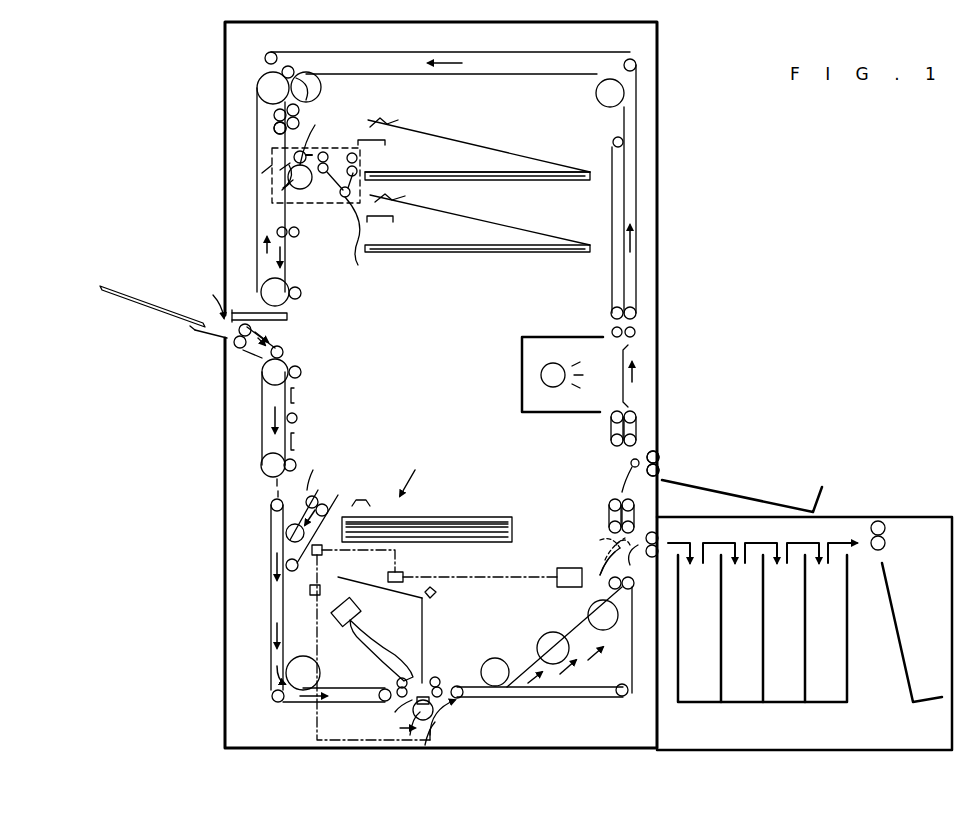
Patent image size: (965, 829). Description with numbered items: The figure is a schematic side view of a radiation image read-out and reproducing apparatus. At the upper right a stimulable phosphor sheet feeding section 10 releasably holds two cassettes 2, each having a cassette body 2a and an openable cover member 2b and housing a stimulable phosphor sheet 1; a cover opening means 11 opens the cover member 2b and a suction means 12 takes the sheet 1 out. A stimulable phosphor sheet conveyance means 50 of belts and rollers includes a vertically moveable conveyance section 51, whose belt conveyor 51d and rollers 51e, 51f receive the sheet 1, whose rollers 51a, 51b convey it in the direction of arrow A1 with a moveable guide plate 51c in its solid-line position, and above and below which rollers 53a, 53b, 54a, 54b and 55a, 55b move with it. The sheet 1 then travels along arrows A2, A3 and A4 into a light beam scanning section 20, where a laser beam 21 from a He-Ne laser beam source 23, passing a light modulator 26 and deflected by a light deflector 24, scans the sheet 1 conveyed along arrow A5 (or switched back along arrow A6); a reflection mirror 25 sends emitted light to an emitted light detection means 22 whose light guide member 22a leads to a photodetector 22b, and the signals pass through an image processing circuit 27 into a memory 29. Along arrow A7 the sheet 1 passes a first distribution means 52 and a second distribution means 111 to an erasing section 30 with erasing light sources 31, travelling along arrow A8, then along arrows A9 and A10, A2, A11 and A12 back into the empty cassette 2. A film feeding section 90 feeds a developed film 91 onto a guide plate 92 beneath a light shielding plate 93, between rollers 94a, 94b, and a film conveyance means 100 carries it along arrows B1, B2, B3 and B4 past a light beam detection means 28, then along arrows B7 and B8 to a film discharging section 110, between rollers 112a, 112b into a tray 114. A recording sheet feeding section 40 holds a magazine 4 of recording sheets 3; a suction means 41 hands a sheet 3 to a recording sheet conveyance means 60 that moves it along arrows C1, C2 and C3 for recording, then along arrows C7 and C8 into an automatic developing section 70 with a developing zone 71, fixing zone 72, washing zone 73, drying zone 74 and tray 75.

The stimulable phosphor sheet 1 is at (443, 174).
The cassette 2 is at (477, 177).
The cassette body 2a is at (508, 178).
The cover member 2b is at (482, 138).
The recording sheet 3 is at (482, 517).
The recording sheet feeding magazine 4 is at (425, 517).
The stimulable phosphor sheet feeding section 10 is at (590, 226).
The cover opening means 11 is at (400, 122).
The suction means 12 is at (388, 140).
The light beam scanning section 20 is at (515, 634).
The laser beam 21 is at (512, 575).
The emitted light detection means 22 is at (396, 647).
The light guide member 22a is at (410, 640).
The photodetector 22b is at (358, 612).
The He-Ne laser beam source 23 is at (568, 587).
The light deflector 24 is at (438, 593).
The reflection mirror 25 is at (444, 680).
The light modulator 26 is at (403, 575).
The image processing circuit 27 is at (300, 595).
The light beam detection means 28 is at (445, 700).
The memory 29 is at (325, 555).
The erasing section 30 is at (530, 350).
The erasing light source 31 is at (545, 380).
The recording sheet feeding section 40 is at (417, 474).
The suction means 41 is at (370, 500).
The stimulable phosphor sheet conveyance means 50 is at (558, 58).
The moveable conveyance section 51 is at (268, 172).
The roller 51a is at (284, 183).
The roller 51b is at (300, 160).
The moveable guide plate 51c is at (274, 132).
The belt conveyor 51d is at (364, 237).
The roller 51e is at (321, 152).
The roller 51f is at (358, 158).
The first distribution means 52 is at (652, 560).
The roller 53a is at (262, 110).
The roller 53b is at (313, 75).
The roller 54a is at (274, 120).
The roller 54b is at (300, 118).
The roller 55a is at (277, 230).
The roller 55b is at (298, 232).
The recording sheet conveyance means 60 is at (315, 500).
The automatic developing section 70 is at (930, 557).
The developing zone 71 is at (695, 693).
The fixing zone 72 is at (745, 693).
The washing zone 73 is at (790, 693).
The drying zone 74 is at (835, 693).
The tray 75 is at (905, 660).
The film feeding section 90 is at (198, 295).
The film 91 is at (112, 298).
The guide plate 92 is at (198, 338).
The light shielding plate 93 is at (290, 314).
The roller 94a is at (280, 338).
The roller 94b is at (238, 347).
The film conveyance means 100 is at (296, 404).
The film discharging section 110 is at (678, 437).
The second distribution means 111 is at (631, 464).
The roller 112a is at (660, 456).
The roller 112b is at (660, 470).
The tray 114 is at (775, 505).
The arrow A1 is at (262, 162).
The arrow A2 is at (288, 258).
The arrow A3 is at (272, 560).
The arrow A4 is at (305, 704).
The arrow A5 is at (412, 703).
The arrow A6 is at (418, 708).
The arrow A7 is at (598, 660).
The arrow A8 is at (642, 375).
The arrow A9 is at (640, 233).
The arrow A10 is at (442, 57).
The arrow A11 is at (262, 250).
The arrow A12 is at (281, 188).
The arrow B1 is at (290, 340).
The arrow B2 is at (275, 415).
The arrow B3 is at (275, 635).
The arrow B4 is at (425, 722).
The arrow B7 is at (565, 680).
The arrow B8 is at (612, 500).
The arrow C1 is at (315, 468).
The arrow C2 is at (275, 670).
The arrow C3 is at (438, 730).
The arrow C7 is at (530, 687).
The arrow C8 is at (605, 540).